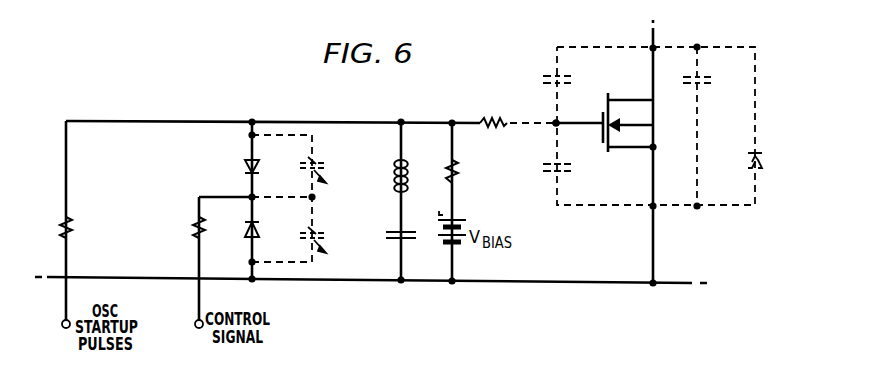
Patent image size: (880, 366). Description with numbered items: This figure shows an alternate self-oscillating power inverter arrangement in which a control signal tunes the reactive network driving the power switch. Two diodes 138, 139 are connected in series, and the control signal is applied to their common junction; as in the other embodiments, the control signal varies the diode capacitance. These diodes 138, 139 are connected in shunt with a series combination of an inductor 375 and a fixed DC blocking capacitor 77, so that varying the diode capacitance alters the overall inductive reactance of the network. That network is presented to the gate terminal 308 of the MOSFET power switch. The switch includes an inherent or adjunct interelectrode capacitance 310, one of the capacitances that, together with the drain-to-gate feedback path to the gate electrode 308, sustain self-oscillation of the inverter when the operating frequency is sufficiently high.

The diode 138 is at (238, 168).
The diode 139 is at (239, 228).
The inductor 375 is at (386, 176).
The fixed DC blocking capacitor 77 is at (392, 235).
The gate electrode 308 is at (555, 120).
The interelectrode capacitance 310 is at (544, 167).